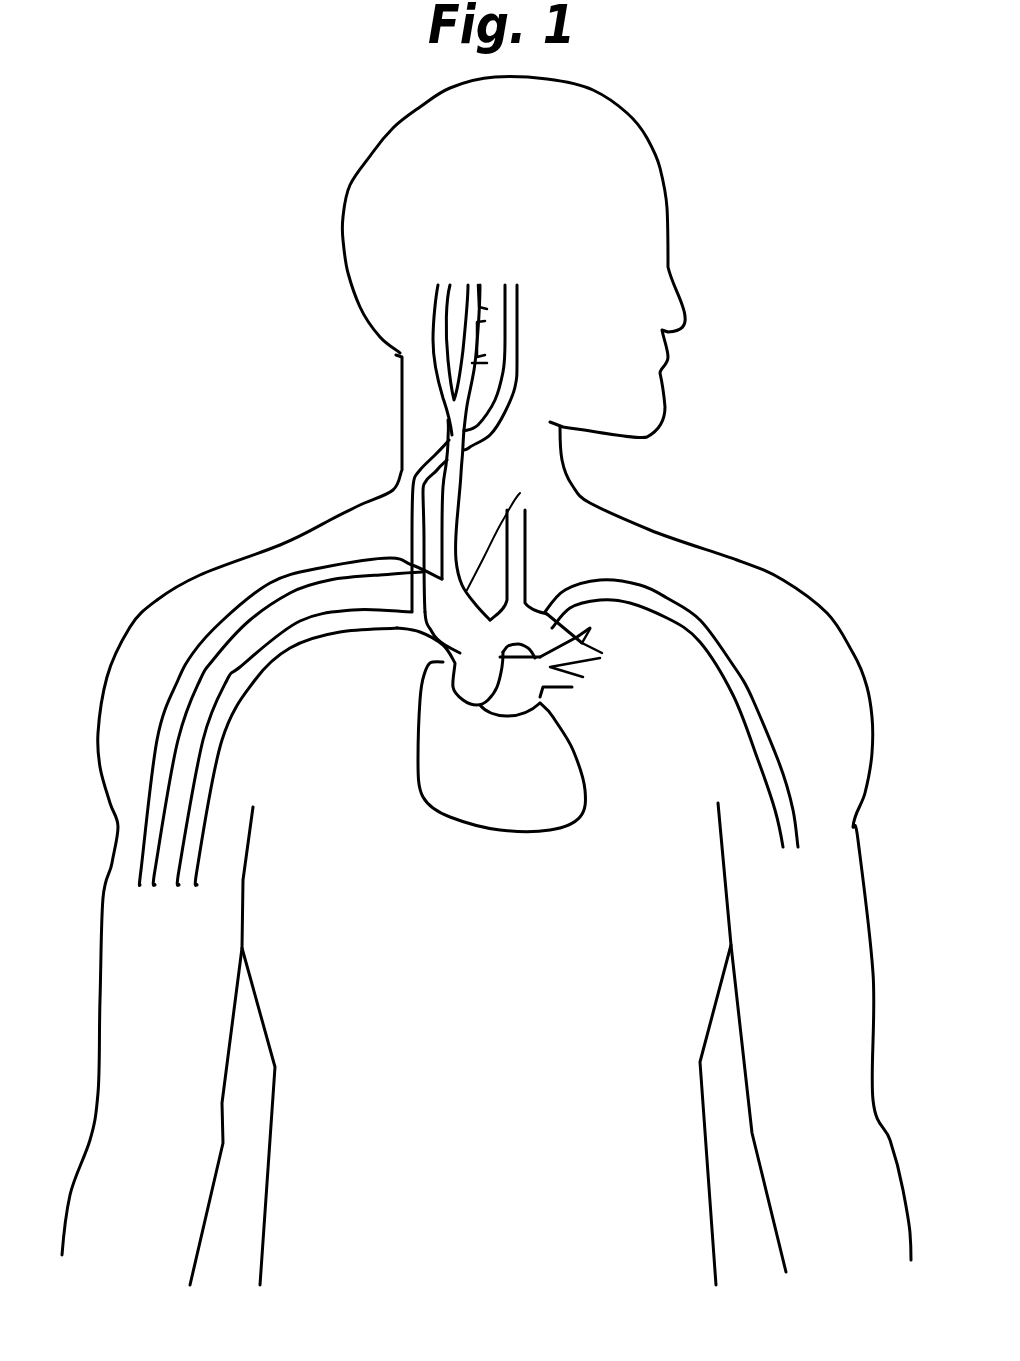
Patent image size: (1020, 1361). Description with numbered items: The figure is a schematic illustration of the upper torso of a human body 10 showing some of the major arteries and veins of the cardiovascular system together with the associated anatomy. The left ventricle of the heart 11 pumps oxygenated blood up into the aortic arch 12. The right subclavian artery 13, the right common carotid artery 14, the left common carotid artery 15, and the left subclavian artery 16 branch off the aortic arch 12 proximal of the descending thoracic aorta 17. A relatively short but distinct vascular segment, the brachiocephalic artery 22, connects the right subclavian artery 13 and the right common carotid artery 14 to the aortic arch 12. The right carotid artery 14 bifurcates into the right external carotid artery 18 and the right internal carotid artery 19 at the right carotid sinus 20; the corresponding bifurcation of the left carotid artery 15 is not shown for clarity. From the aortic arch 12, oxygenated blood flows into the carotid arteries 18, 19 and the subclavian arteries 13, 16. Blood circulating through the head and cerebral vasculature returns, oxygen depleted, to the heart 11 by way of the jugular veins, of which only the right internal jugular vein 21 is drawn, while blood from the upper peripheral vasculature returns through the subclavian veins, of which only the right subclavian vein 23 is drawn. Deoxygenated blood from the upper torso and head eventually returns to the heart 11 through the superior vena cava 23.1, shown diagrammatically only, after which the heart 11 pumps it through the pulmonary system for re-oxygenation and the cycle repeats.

The human body 10 is at (275, 397).
The heart 11 is at (575, 798).
The aortic arch 12 is at (462, 678).
The right subclavian artery 13 is at (352, 568).
The right common carotid artery 14 is at (463, 473).
The left common carotid artery 15 is at (517, 562).
The left subclavian artery 16 is at (665, 597).
The descending thoracic aorta 17 is at (548, 626).
The right external carotid artery 18 is at (433, 307).
The right internal carotid artery 19 is at (478, 294).
The right carotid sinus 20 is at (433, 378).
The right internal jugular vein 21 is at (507, 345).
The brachiocephalic artery 22 is at (520, 493).
The right subclavian vein 23 is at (230, 688).
The superior vena cava 23.1 is at (422, 664).